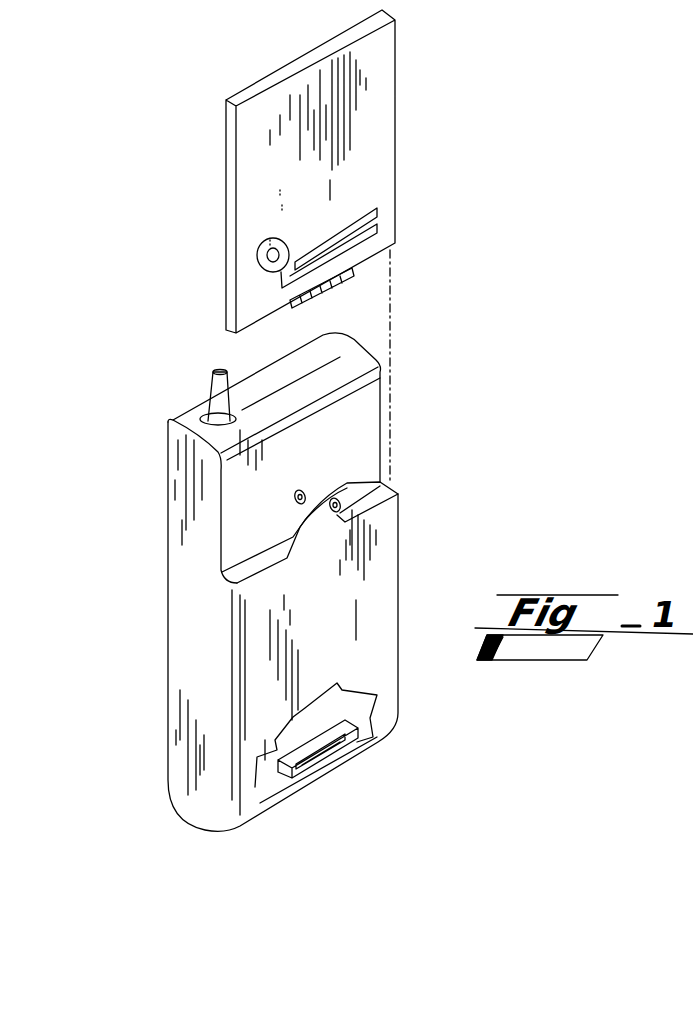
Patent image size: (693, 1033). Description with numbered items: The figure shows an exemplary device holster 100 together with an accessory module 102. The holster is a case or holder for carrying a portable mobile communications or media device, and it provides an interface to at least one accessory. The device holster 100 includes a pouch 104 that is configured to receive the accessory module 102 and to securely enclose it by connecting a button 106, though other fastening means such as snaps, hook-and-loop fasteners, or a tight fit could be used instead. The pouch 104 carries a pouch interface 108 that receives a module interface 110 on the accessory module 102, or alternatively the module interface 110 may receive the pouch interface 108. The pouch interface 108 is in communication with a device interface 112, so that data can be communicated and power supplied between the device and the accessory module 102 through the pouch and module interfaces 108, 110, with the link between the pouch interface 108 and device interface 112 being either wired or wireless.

The device holster 100 is at (175, 328).
The accessory module 102 is at (407, 152).
The pouch 104 is at (410, 580).
The button 106 is at (300, 490).
The pouch interface 108 is at (345, 762).
The module interface 110 is at (340, 290).
The device interface 112 is at (337, 690).